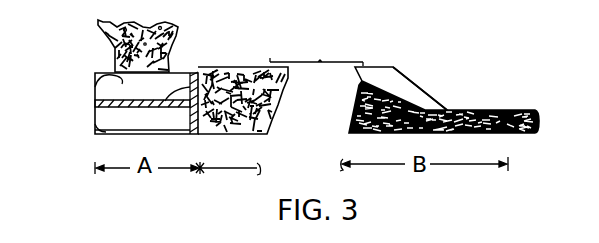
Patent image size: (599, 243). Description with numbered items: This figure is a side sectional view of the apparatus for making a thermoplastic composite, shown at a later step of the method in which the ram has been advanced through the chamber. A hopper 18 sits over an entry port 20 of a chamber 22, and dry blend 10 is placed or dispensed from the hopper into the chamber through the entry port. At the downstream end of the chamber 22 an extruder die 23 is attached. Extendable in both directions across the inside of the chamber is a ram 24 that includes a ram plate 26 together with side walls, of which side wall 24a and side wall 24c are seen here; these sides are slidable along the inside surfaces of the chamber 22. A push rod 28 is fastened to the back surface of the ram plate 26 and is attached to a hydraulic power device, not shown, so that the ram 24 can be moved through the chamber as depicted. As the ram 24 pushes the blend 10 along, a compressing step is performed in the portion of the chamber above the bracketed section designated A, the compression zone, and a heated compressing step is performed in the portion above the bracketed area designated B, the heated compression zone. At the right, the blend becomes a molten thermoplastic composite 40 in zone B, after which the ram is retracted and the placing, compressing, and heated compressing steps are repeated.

The dry blend 10 is at (110, 30).
The hopper 18 is at (181, 27).
The entry port 20 is at (171, 57).
The chamber 22 is at (394, 60).
The extruder die 23 is at (508, 112).
The ram 24 is at (90, 88).
The side wall 24a is at (93, 83).
The side wall 24c is at (92, 128).
The ram plate 26 is at (167, 100).
The push rod 28 is at (94, 103).
The molten thermoplastic composite 40 is at (424, 93).